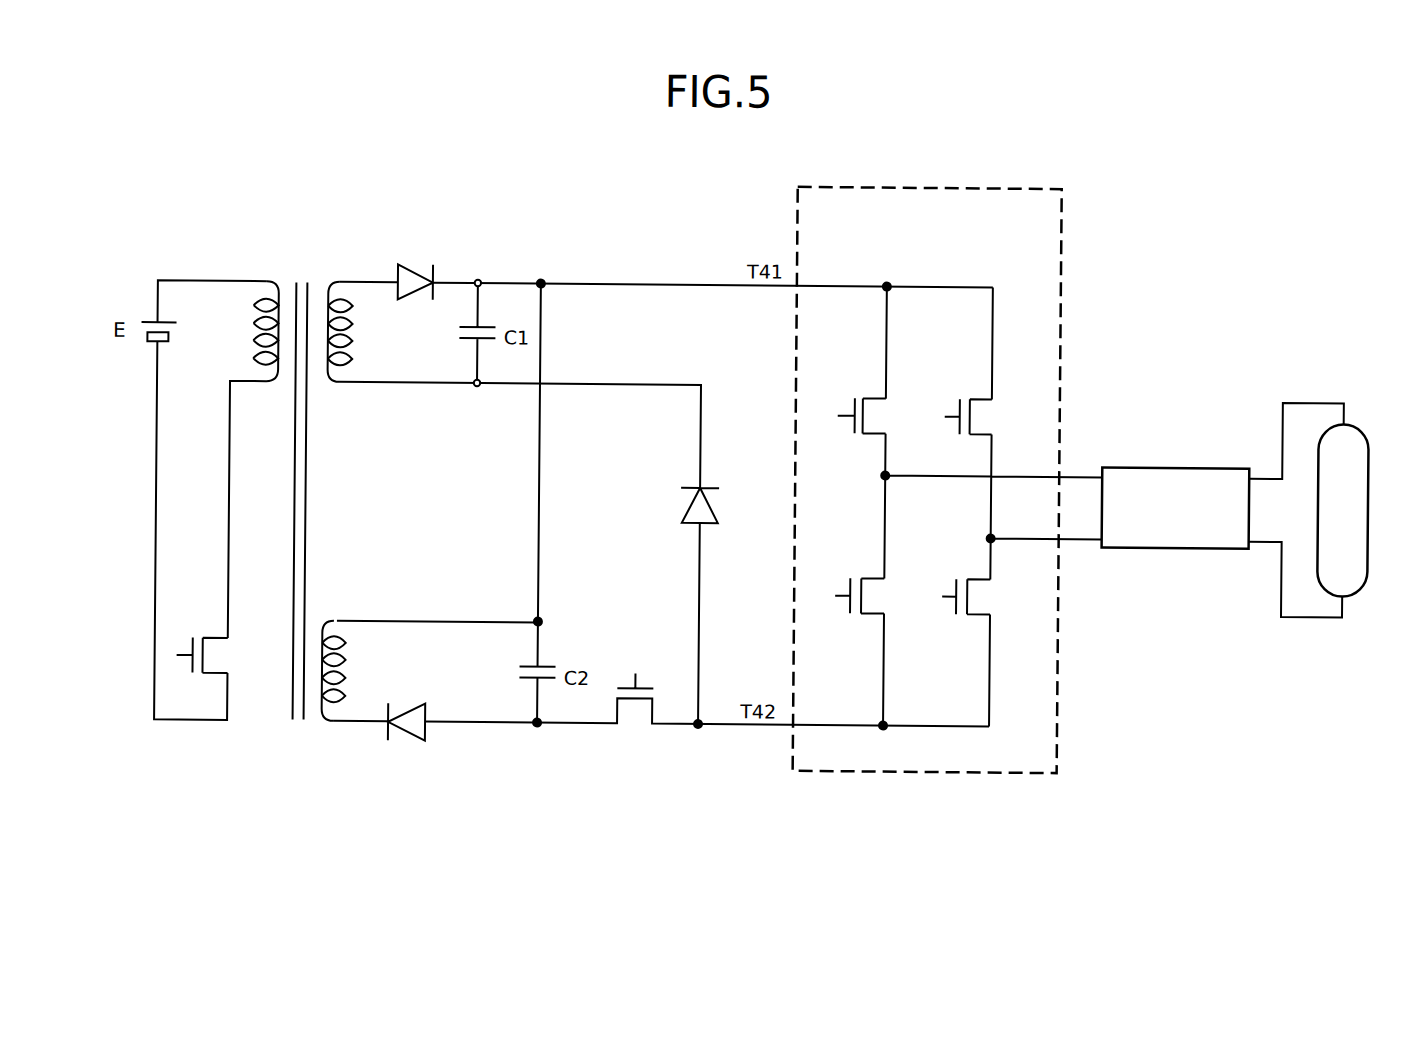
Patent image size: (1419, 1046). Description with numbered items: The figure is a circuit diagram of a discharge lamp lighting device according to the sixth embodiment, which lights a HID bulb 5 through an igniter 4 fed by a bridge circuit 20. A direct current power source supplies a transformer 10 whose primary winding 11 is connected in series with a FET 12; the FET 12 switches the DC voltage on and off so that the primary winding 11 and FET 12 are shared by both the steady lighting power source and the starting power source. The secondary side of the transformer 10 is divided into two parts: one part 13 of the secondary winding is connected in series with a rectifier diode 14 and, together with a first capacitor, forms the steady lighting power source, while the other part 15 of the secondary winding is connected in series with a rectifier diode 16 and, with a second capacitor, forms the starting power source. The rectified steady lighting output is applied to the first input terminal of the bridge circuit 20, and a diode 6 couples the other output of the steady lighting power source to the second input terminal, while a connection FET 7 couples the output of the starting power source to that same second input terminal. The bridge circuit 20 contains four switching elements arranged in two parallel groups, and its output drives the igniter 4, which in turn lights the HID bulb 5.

The igniter 4 is at (1202, 463).
The HID bulb 5 is at (1370, 482).
The diode 6 is at (681, 512).
The connection FET 7 is at (638, 731).
The transformer 10 is at (361, 231).
The primary winding 11 is at (264, 281).
The FET 12 is at (201, 634).
The part of the secondary winding 13 is at (339, 281).
The rectifier diode 14 is at (414, 267).
The other part of the secondary winding 15 is at (339, 619).
The rectifier diode 16 is at (410, 704).
The bridge circuit 20 is at (1000, 183).